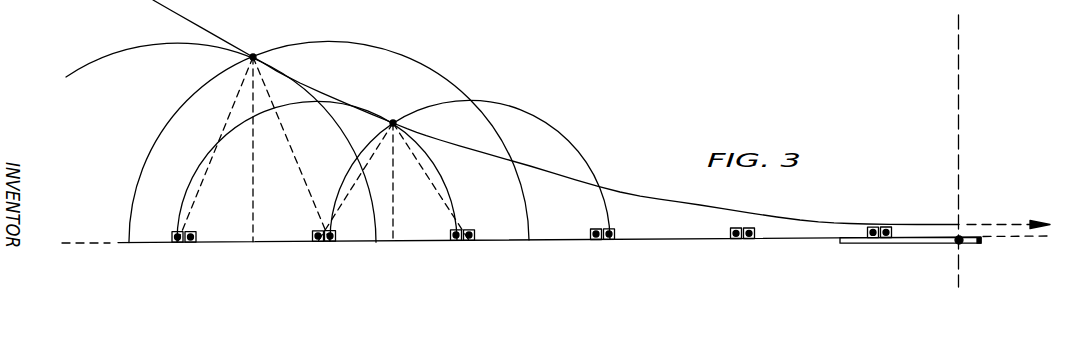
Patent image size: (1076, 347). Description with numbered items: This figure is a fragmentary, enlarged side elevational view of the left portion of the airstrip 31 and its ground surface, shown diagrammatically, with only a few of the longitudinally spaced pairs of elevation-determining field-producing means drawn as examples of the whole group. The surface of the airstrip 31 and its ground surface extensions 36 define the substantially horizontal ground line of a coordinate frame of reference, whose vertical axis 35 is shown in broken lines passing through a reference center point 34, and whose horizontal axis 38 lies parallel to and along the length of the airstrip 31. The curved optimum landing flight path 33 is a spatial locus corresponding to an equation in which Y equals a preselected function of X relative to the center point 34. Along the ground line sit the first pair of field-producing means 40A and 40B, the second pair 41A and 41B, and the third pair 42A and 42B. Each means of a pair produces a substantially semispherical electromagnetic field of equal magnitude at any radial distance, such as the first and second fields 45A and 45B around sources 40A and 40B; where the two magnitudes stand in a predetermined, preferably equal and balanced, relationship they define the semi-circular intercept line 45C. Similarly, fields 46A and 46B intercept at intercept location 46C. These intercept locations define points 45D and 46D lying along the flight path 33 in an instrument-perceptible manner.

The airstrip 31 is at (855, 244).
The optimum landing flight path 33 is at (462, 148).
The reference center point 34 is at (956, 242).
The vertical axis 35 is at (960, 140).
The ground surface extensions 36 is at (675, 241).
The axis along the airstrip 38 is at (88, 246).
The field-producing means 40A is at (177, 244).
The field-producing means 40B is at (331, 244).
The field-producing means 41A is at (316, 244).
The field-producing means 41B is at (470, 243).
The field-producing means 42A is at (455, 243).
The field-producing means 42B is at (597, 243).
The first electromagnetic field 45A is at (130, 49).
The second electromagnetic field 45B is at (309, 42).
The semi-circular intercept line 45C is at (256, 184).
The flight path point 45D is at (253, 56).
The electromagnetic field 46A is at (337, 103).
The electromagnetic field 46B is at (518, 112).
The intercept location 46C is at (395, 191).
The flight path point 46D is at (393, 121).